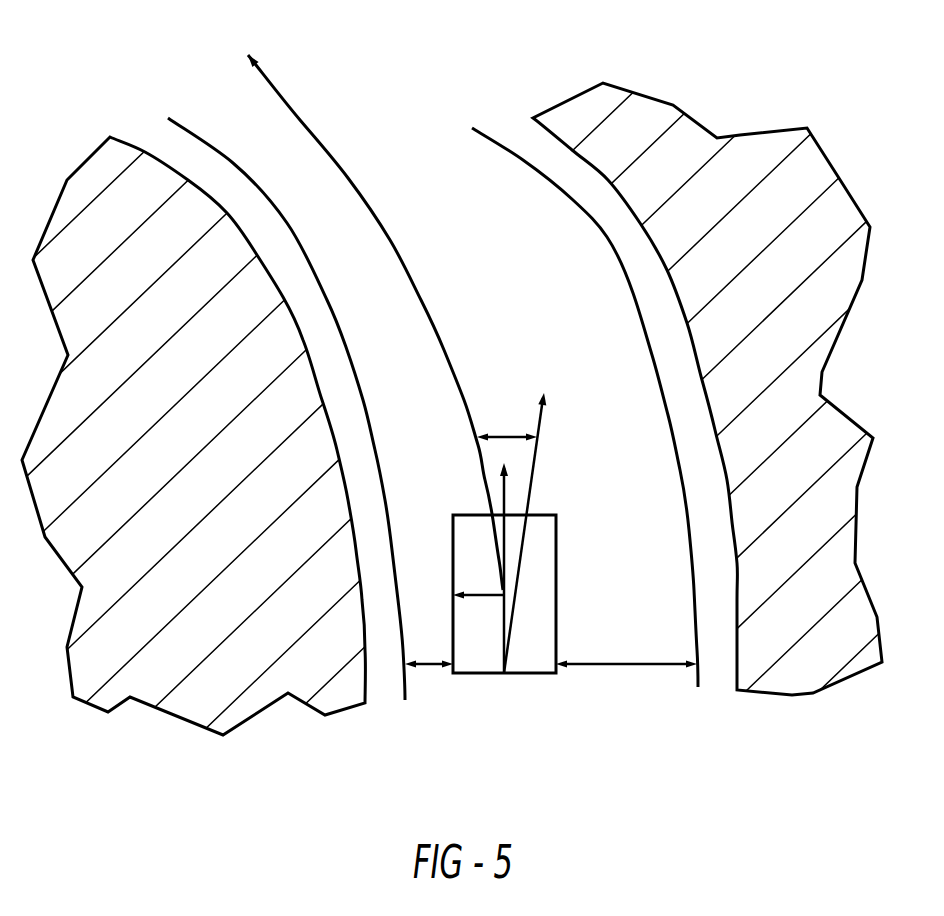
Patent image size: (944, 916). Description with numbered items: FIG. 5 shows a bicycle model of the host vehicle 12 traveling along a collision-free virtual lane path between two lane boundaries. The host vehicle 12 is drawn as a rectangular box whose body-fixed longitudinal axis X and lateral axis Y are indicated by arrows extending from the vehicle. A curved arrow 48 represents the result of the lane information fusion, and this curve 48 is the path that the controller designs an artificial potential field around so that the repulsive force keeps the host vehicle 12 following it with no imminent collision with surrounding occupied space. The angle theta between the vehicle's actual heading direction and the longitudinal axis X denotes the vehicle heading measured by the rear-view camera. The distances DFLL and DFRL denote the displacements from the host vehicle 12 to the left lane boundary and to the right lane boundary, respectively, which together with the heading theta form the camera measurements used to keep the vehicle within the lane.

The curved arrow 48 is at (348, 178).
The host vehicle 12 is at (551, 591).
The longitudinal axis of vehicle X is at (509, 568).
The lateral axis of vehicle Y is at (478, 584).
The vehicle heading theta is at (511, 533).
The displacement to left lane boundary DFLL is at (435, 688).
The displacement to right lane boundary DFRL is at (626, 684).